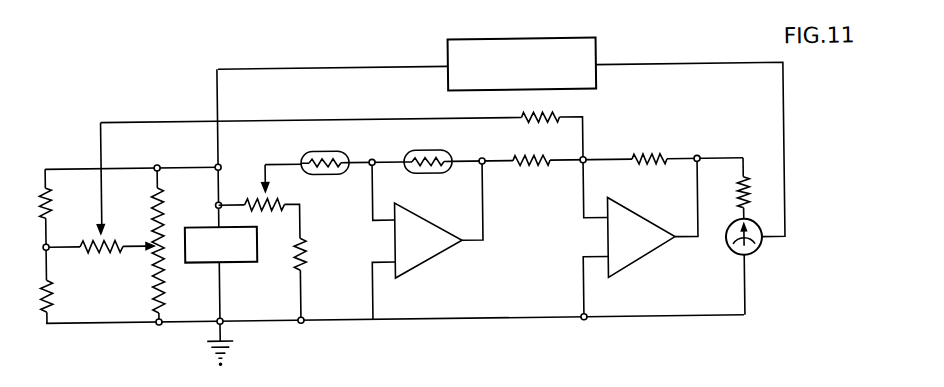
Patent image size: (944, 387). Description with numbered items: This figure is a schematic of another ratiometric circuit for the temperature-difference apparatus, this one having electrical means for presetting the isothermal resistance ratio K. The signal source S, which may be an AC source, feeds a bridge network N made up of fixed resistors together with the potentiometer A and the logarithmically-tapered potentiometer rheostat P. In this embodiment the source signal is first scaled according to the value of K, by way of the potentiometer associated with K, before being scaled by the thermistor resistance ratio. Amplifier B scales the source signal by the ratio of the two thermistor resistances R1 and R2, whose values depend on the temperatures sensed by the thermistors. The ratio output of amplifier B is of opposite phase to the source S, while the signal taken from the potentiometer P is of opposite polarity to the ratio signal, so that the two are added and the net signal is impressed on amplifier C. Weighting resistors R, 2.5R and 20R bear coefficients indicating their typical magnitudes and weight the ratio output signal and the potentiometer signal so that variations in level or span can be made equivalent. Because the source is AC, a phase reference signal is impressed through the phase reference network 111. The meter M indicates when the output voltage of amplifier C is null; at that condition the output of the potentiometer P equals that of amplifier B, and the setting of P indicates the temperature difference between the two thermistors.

The phase reference network 111 is at (599, 48).
The bridge network N is at (97, 339).
The potentiometer A is at (101, 199).
The logarithmically-tapered potentiometer rheostat P is at (138, 265).
The signal source S is at (237, 260).
The isothermal resistance ratio K is at (243, 186).
The thermistor resistance R1(T1) R1 is at (306, 148).
The thermistor resistance R2(T2) R2 is at (411, 148).
The resistor 2.5R is at (534, 156).
The resistor R is at (560, 119).
The resistor 20R is at (634, 155).
The amplifier B is at (419, 251).
The amplifier C is at (631, 251).
The meter M is at (719, 275).